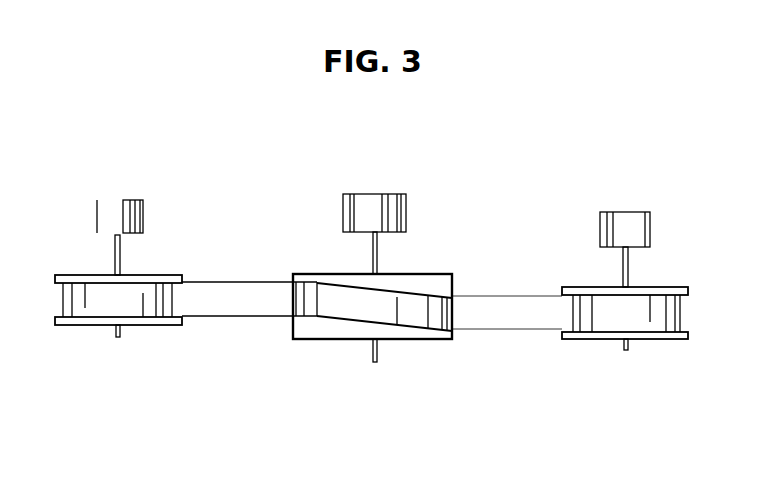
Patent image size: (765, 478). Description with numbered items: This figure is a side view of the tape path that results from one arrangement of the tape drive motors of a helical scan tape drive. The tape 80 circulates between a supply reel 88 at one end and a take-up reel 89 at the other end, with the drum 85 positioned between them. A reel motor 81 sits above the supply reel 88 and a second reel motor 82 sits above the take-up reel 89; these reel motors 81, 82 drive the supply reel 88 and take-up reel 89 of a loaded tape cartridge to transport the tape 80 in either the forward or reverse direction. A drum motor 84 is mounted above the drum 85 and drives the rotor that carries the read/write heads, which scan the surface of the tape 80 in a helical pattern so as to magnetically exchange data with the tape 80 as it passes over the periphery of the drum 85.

The tape 80 is at (230, 303).
The reel motor 81 is at (118, 203).
The reel motor 82 is at (628, 218).
The drum motor 84 is at (378, 200).
The drum 85 is at (437, 282).
The supply reel 88 is at (80, 325).
The take-up reel 89 is at (667, 339).